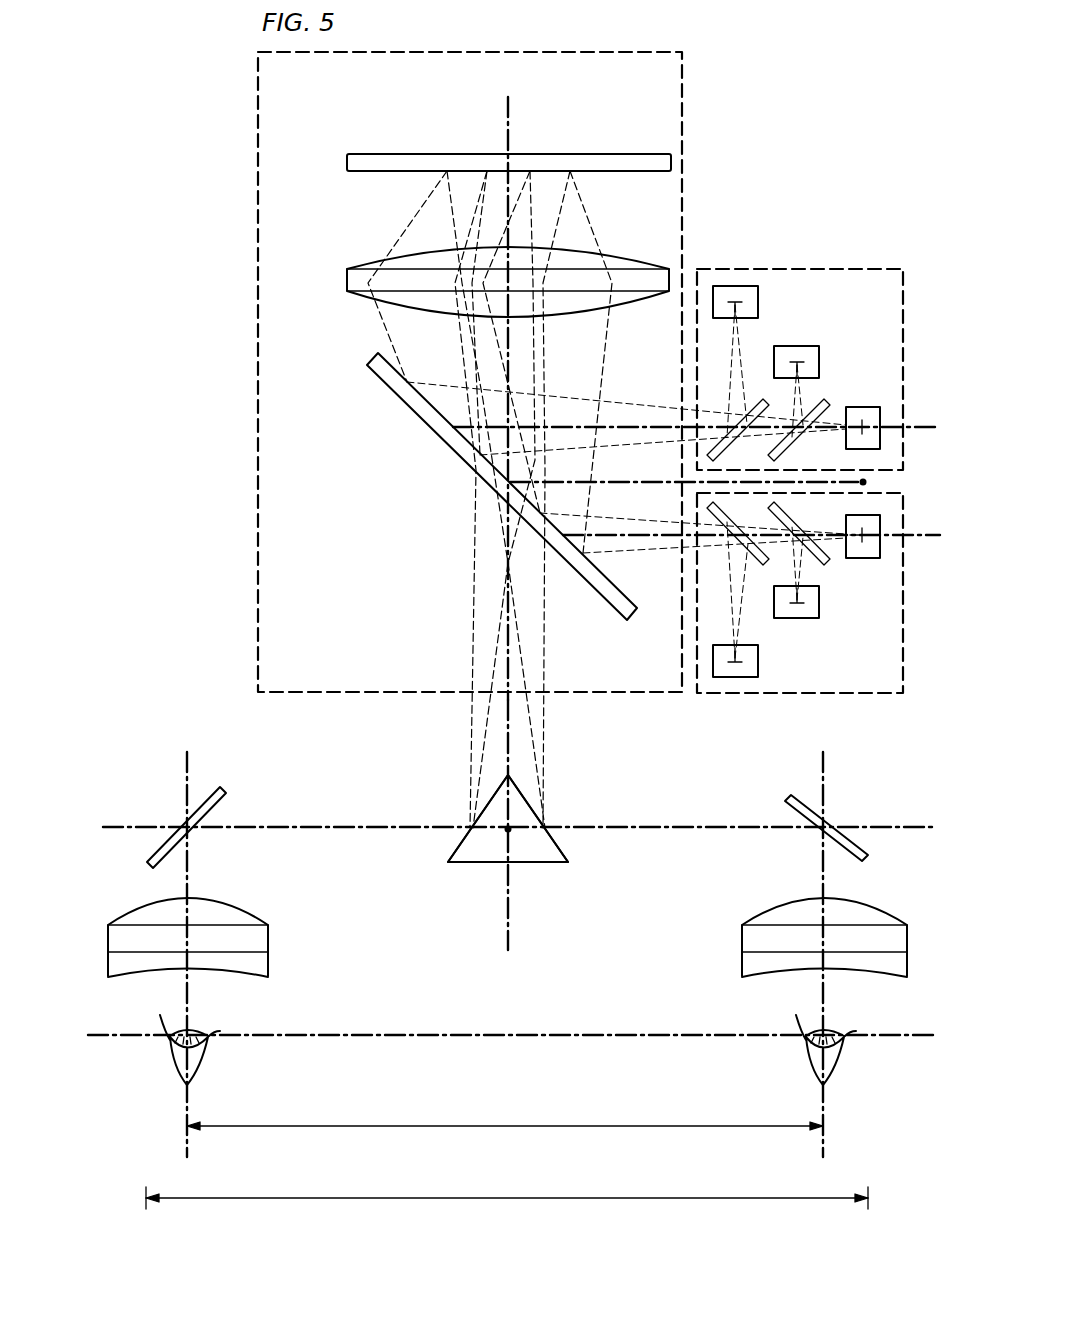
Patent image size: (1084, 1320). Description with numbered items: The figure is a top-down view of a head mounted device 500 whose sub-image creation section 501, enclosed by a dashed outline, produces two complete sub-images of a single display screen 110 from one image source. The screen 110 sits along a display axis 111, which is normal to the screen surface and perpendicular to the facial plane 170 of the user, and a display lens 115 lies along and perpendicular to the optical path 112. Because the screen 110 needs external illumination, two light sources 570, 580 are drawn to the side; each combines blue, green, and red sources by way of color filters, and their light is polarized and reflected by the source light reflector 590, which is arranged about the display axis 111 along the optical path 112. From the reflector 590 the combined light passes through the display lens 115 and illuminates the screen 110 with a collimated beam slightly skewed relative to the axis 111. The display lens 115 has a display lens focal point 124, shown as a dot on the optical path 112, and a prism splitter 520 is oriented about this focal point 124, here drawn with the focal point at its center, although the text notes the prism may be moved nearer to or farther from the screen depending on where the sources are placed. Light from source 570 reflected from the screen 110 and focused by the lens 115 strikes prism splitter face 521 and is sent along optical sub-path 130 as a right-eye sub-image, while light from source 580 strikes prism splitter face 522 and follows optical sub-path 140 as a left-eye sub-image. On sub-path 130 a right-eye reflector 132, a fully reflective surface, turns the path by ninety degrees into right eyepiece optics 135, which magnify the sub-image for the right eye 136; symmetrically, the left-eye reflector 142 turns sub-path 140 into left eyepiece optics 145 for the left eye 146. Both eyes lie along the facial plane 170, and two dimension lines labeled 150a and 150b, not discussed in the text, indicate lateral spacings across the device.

The head mounted device 500 is at (203, 161).
The sub-image creation section 501 is at (612, 52).
The display screen 110 is at (548, 154).
The display axis 111 is at (508, 108).
The optical path 112 is at (508, 935).
The display lens 115 is at (347, 280).
The source light reflector 590 is at (395, 393).
The light source 570 is at (873, 269).
The light source 580 is at (875, 693).
The prism splitter 520 is at (572, 898).
The prism splitter face 521 is at (570, 850).
The prism splitter face 522 is at (446, 850).
The display lens focal point 124 is at (500, 833).
The optical sub-path 130 is at (687, 827).
The optical sub-path 140 is at (300, 827).
The right-eye reflector 132 is at (860, 847).
The left-eye reflector 142 is at (153, 848).
The right eyepiece optics 135 is at (742, 942).
The left eyepiece optics 145 is at (268, 942).
The right eye 136 is at (845, 1068).
The left eye 146 is at (178, 1068).
The facial plane 170 is at (630, 1040).
The interpupillary distance 150a is at (505, 1130).
The overall width 150b is at (505, 1200).